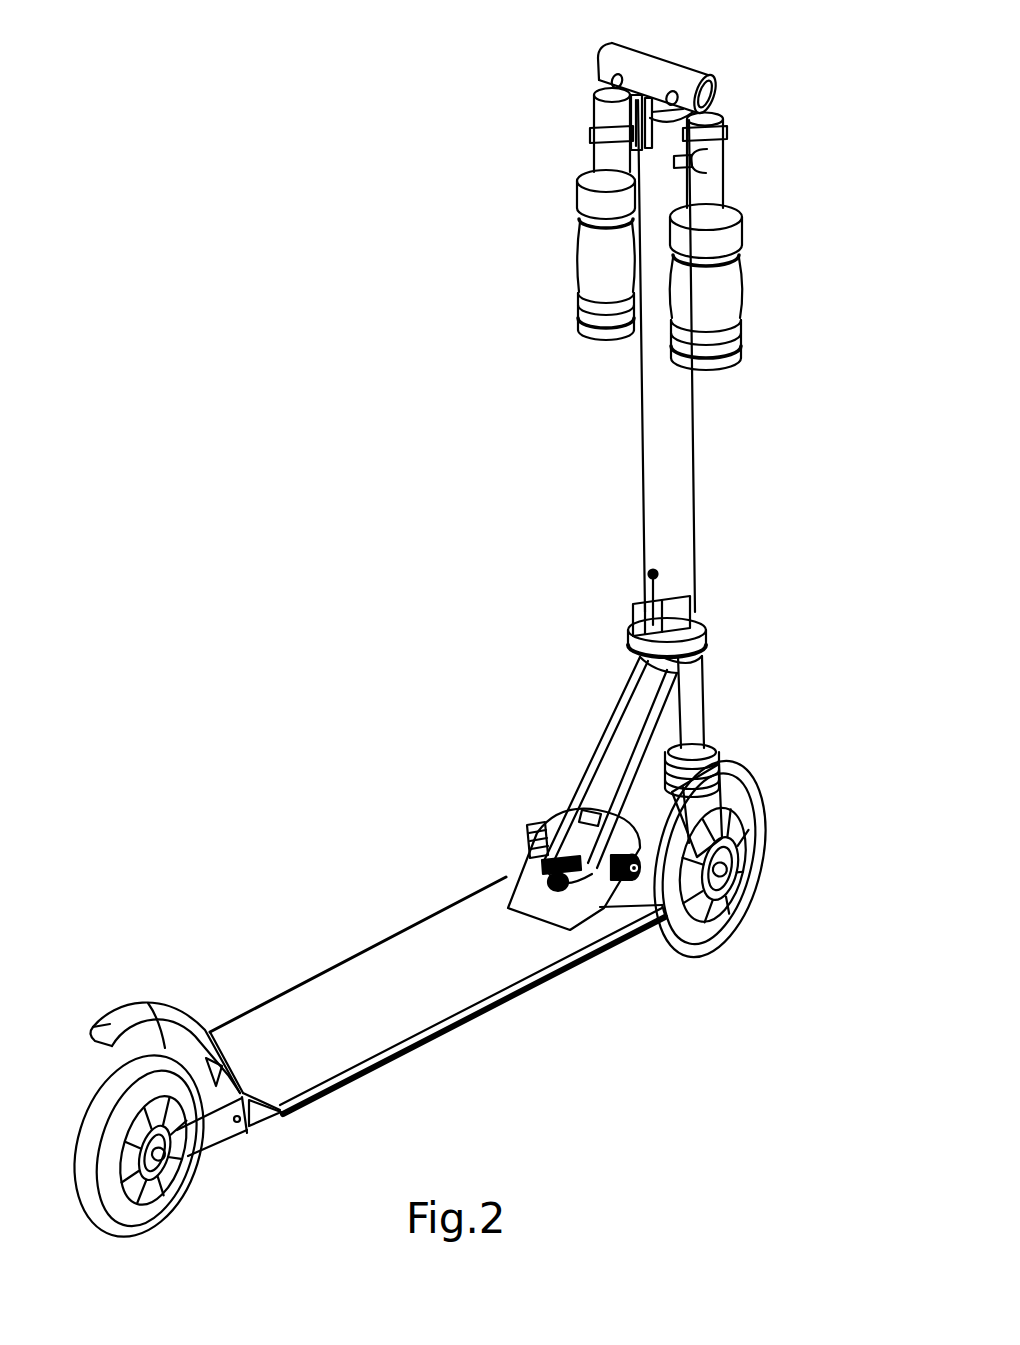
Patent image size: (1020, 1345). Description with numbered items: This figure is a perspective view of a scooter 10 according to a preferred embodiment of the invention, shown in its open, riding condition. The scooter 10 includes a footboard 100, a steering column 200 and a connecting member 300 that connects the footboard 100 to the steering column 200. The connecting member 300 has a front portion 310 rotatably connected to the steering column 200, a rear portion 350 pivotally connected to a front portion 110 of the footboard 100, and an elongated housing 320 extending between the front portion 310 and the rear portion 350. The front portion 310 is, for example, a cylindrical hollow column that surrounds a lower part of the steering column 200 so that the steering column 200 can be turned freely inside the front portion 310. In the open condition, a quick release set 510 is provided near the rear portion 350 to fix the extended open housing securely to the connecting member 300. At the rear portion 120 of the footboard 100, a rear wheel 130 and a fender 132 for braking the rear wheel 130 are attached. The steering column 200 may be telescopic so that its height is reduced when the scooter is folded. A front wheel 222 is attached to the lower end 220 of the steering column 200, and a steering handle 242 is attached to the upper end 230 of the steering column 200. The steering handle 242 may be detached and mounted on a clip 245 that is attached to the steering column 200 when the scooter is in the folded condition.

The scooter 10 is at (252, 308).
The footboard 100 is at (296, 1004).
The front portion of the footboard 110 is at (623, 915).
The rear portion of the footboard 120 is at (290, 1071).
The rear wheel 130 is at (140, 1223).
The fender 132 is at (135, 1015).
The steering column 200 is at (665, 398).
The lower end of the steering column 220 is at (700, 798).
The front wheel 222 is at (705, 945).
The upper end of the steering column 230 is at (650, 172).
The steering handle 242 is at (708, 282).
The clip 245 is at (700, 170).
The connecting member 300 is at (620, 753).
The front portion of the connecting member 310 is at (692, 690).
The elongated housing 320 is at (672, 736).
The rear portion of the connecting member 350 is at (580, 843).
The quick release set 510 is at (624, 892).